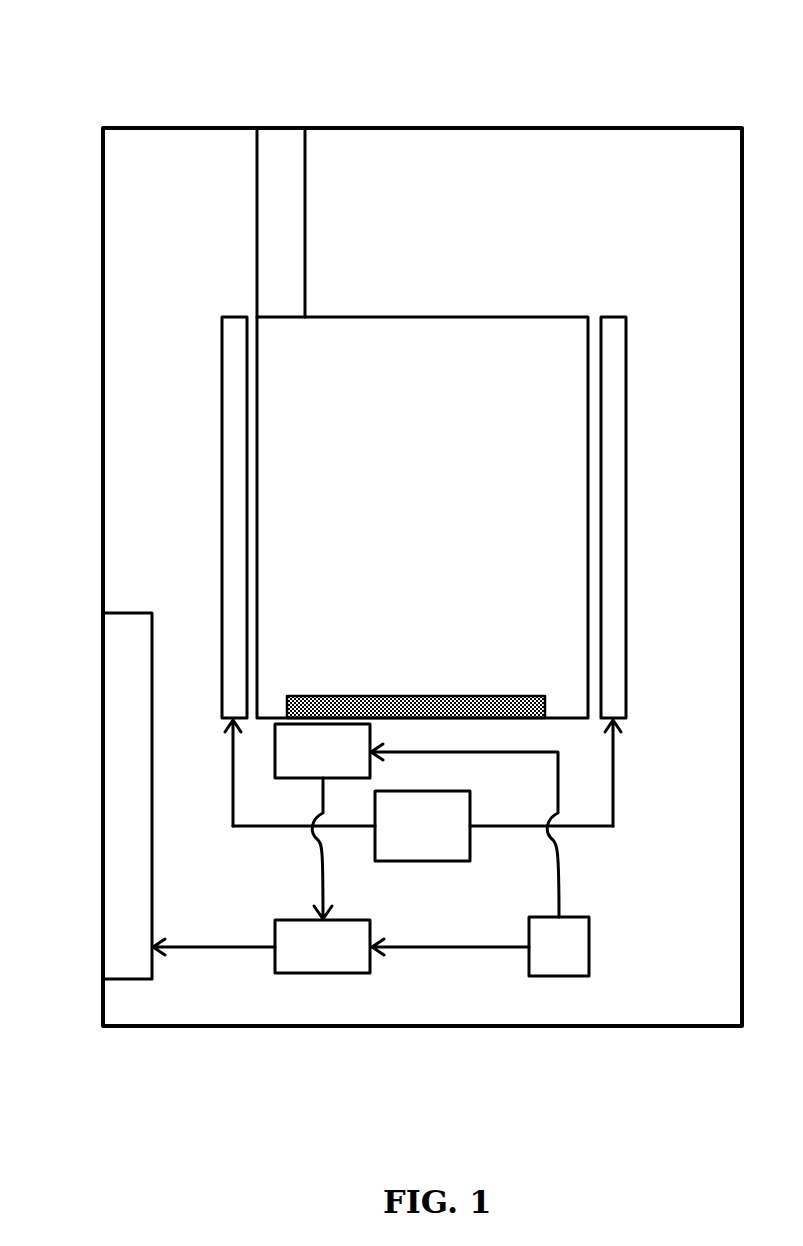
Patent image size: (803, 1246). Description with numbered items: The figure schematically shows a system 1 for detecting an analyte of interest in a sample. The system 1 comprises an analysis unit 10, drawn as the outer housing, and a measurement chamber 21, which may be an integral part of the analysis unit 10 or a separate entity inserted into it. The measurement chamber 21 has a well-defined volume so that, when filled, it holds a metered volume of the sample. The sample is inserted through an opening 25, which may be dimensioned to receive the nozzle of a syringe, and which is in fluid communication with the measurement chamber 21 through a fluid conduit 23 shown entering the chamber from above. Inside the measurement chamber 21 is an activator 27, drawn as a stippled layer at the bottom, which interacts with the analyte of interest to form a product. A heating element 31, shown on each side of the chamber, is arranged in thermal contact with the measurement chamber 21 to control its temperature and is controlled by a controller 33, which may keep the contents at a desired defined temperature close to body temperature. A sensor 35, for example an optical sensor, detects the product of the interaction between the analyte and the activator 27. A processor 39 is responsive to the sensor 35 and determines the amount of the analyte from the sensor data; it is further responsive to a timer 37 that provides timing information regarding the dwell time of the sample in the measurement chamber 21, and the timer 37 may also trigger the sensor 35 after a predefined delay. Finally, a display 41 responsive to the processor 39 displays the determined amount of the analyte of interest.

The system 1 is at (441, 1125).
The analysis unit 10 is at (150, 1027).
The measurement chamber 21 is at (507, 362).
The fluid conduit 23 is at (287, 195).
The opening 25 is at (281, 128).
The activator 27 is at (400, 695).
The heating element 31 is at (242, 496).
The controller 33 is at (424, 830).
The sensor 35 is at (291, 765).
The timer 37 is at (557, 975).
The processor 39 is at (295, 970).
The display 41 is at (128, 778).